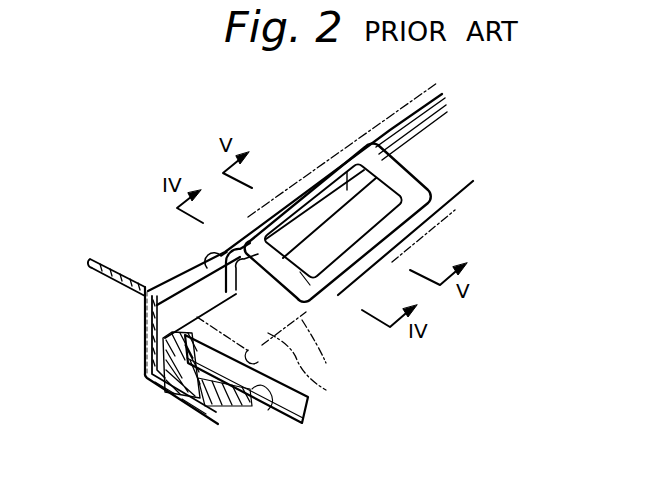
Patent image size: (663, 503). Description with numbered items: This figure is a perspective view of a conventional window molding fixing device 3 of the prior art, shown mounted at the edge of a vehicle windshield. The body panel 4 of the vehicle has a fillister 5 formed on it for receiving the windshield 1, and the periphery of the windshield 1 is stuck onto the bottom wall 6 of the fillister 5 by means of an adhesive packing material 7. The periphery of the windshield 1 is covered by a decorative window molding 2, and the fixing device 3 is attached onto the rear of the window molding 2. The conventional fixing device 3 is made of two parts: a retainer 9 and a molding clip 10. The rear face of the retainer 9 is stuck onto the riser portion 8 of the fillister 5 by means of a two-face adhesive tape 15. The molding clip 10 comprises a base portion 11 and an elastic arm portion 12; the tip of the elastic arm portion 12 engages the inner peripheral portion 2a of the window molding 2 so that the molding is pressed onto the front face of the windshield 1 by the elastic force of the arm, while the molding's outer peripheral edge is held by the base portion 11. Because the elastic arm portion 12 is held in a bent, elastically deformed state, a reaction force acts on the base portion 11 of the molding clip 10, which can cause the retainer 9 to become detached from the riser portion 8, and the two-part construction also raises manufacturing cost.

The windshield 1 is at (282, 402).
The window molding 2 is at (311, 368).
The inner peripheral portion 2a is at (333, 372).
The window molding fixing device 3 is at (419, 166).
The body panel 4 is at (108, 273).
The fillister 5 is at (143, 377).
The bottom wall 6 is at (172, 397).
The adhesive packing material 7 is at (190, 402).
The riser portion 8 is at (144, 326).
The retainer 9 is at (170, 296).
The molding clip 10 is at (412, 197).
The base portion 11 is at (195, 294).
The elastic arm portion 12 is at (312, 296).
The two-face adhesive tape 15 is at (152, 355).